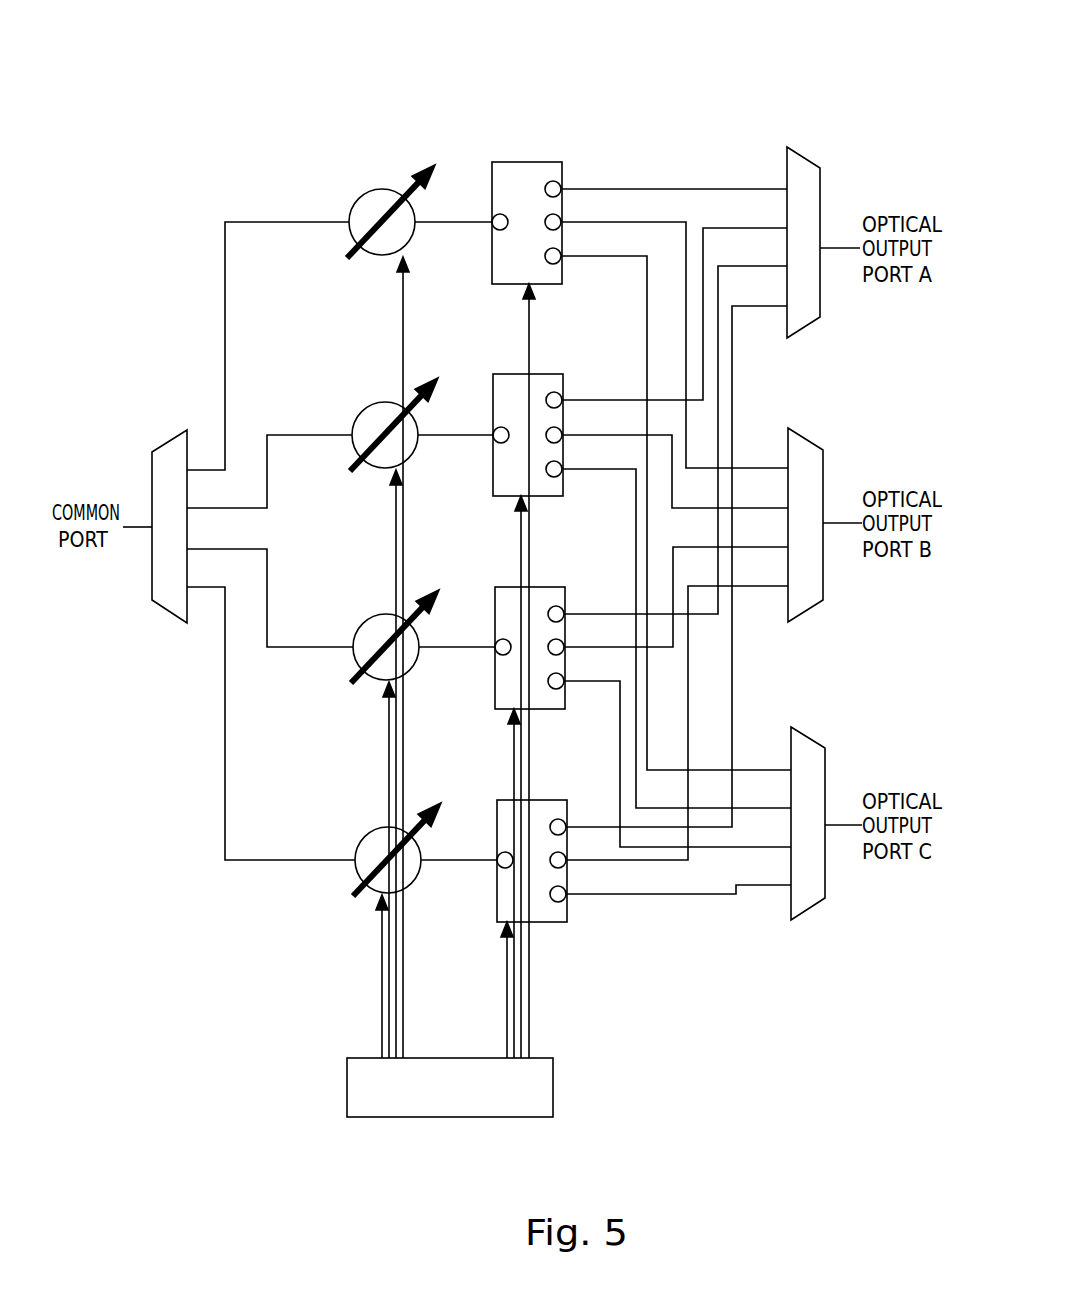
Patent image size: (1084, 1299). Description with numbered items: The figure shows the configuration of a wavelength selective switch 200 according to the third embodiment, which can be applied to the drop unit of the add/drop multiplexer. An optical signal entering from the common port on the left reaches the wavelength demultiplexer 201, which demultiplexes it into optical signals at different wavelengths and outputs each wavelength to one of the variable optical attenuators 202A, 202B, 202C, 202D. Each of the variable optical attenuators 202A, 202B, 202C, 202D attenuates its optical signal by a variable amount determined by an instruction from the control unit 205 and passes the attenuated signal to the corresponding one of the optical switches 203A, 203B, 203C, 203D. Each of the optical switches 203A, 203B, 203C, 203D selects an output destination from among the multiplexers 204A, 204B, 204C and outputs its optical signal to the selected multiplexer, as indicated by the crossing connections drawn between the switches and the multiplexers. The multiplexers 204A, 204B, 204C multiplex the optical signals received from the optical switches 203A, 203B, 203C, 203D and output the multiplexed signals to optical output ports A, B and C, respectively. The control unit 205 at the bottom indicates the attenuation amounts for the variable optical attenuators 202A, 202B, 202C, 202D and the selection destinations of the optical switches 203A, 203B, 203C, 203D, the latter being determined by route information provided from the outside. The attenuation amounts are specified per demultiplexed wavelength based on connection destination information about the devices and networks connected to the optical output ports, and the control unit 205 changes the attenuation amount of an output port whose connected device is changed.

The wavelength selective switch 200 is at (462, 32).
The wavelength demultiplexer 201 is at (170, 438).
The variable optical attenuator 202A is at (372, 188).
The variable optical attenuator 202B is at (375, 399).
The variable optical attenuator 202C is at (376, 612).
The variable optical attenuator 202D is at (378, 825).
The optical switch 203A is at (550, 162).
The optical switch 203B is at (552, 374).
The optical switch 203C is at (554, 587).
The optical switch 203D is at (556, 800).
The multiplexer 204A is at (798, 158).
The multiplexer 204B is at (800, 438).
The multiplexer 204C is at (803, 738).
The control unit 205 is at (553, 1058).